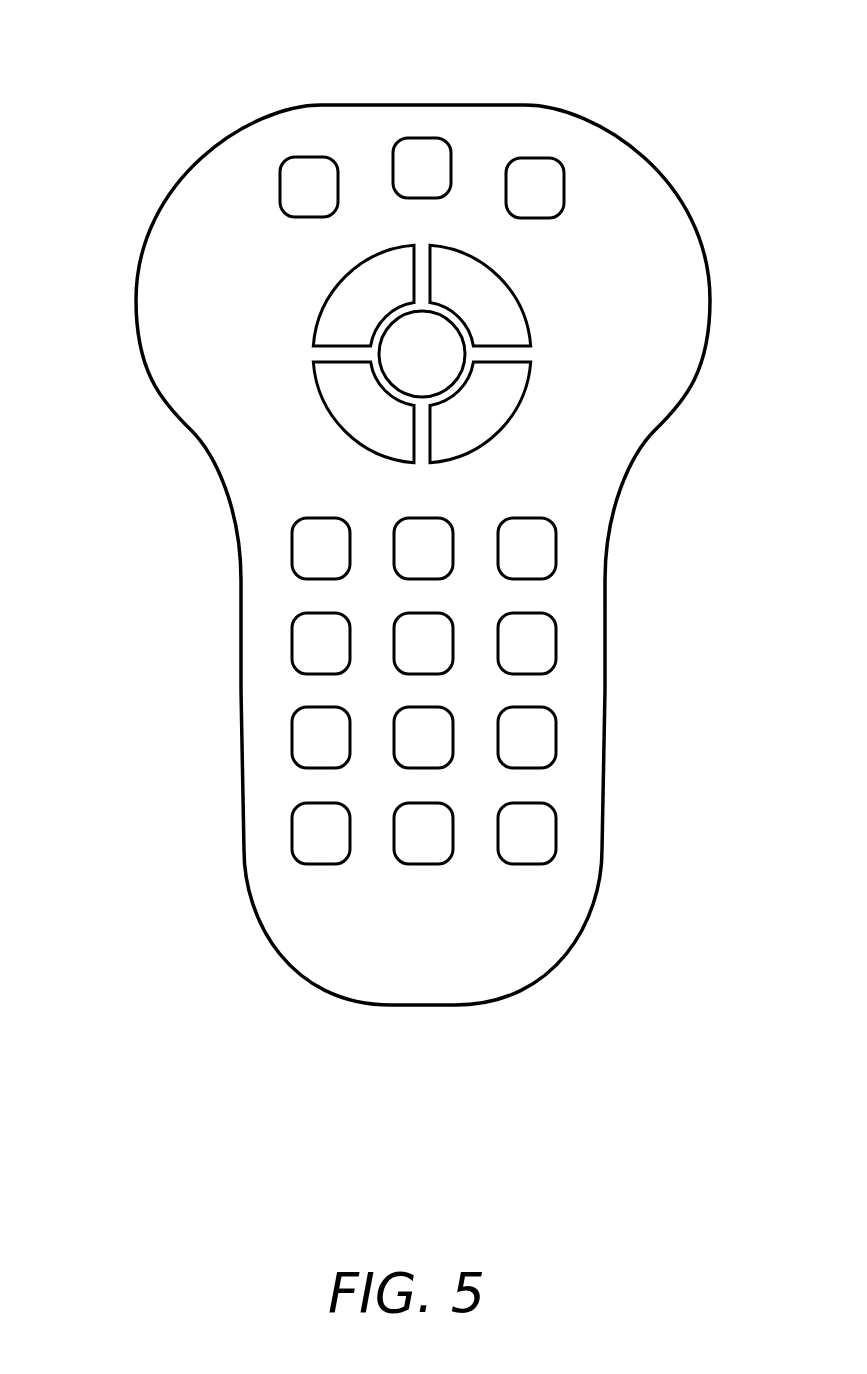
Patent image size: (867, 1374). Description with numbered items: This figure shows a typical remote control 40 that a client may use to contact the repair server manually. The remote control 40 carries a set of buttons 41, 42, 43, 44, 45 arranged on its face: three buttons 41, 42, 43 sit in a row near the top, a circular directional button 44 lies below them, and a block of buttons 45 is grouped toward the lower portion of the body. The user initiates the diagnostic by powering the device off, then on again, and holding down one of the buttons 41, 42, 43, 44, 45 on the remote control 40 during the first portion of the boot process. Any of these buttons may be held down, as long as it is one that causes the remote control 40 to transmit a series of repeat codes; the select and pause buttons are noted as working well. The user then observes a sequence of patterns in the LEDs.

The remote control 40 is at (167, 203).
The button 41 is at (303, 157).
The button 42 is at (422, 138).
The button 43 is at (533, 158).
The button 44 is at (575, 258).
The button 45 is at (570, 868).